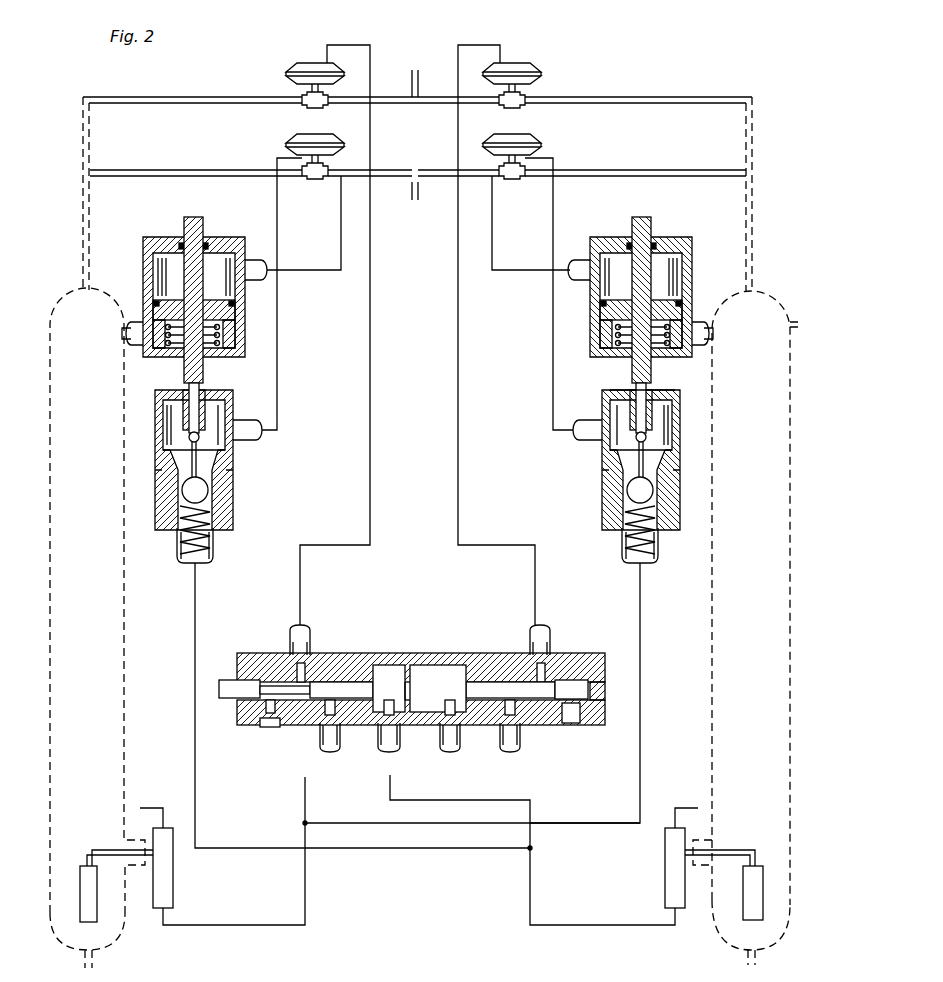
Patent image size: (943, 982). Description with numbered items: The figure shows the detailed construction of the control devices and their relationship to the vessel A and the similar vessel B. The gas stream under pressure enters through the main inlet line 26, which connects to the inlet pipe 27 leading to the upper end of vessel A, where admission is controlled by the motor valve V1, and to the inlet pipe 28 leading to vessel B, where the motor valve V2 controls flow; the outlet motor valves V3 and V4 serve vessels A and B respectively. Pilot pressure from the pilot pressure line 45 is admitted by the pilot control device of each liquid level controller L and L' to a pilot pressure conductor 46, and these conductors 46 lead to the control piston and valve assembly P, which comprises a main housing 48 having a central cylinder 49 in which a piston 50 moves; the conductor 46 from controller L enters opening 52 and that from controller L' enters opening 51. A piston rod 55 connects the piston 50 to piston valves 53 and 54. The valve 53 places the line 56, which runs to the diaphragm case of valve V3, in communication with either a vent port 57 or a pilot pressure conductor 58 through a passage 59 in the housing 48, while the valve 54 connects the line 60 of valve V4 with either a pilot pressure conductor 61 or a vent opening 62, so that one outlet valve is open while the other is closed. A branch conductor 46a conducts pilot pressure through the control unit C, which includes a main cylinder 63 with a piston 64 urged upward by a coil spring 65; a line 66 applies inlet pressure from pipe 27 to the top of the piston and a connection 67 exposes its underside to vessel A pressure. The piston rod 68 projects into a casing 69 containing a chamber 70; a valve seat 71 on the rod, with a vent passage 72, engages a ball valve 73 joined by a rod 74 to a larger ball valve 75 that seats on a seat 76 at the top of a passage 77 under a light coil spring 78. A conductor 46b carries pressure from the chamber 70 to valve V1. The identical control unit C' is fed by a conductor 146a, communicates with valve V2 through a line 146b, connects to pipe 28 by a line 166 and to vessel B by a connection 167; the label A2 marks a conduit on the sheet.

The main inlet line 26 is at (413, 200).
The inlet pipe 27 is at (437, 168).
The inlet pipe 28 is at (218, 170).
The pilot pressure line 45 is at (165, 812).
The pilot pressure conductor 46 is at (305, 918).
The branch conductor 46a is at (662, 545).
The conductor 46b is at (553, 398).
The main housing 48 is at (343, 653).
The central cylinder 49 is at (448, 668).
The piston 50 is at (405, 668).
The opening 51 is at (463, 737).
The opening 52 is at (305, 775).
The piston valve 53 is at (538, 690).
The piston valve 54 is at (263, 680).
The piston rod 55 is at (483, 685).
The line 56 is at (455, 480).
The vent port 57 is at (603, 720).
The pilot pressure conductor 58 is at (520, 742).
The passage 59 is at (518, 665).
The line 60 is at (371, 481).
The pilot pressure conductor 61 is at (322, 740).
The vent opening 62 is at (268, 730).
The main cylinder 63 is at (143, 273).
The piston 64 is at (238, 300).
The coil spring 65 is at (225, 330).
The line 66 is at (493, 213).
The connection 67 is at (700, 318).
The piston rod 68 is at (205, 355).
The casing 69 is at (665, 392).
The chamber 70 is at (218, 413).
The valve seat 71 is at (190, 430).
The vent passage 72 is at (205, 380).
The ball valve 73 is at (190, 440).
The rod 74 is at (235, 455).
The ball valve 75 is at (215, 490).
The seat 76 is at (232, 468).
The passage 77 is at (228, 505).
The light coil spring 78 is at (188, 497).
The conductor 146a is at (195, 593).
The line 146b is at (279, 380).
The line 166 is at (318, 270).
The connection 167 is at (125, 333).
The motor valve V1 is at (512, 133).
The motor valve V2 is at (328, 133).
The motor valve V3 is at (528, 60).
The motor valve V4 is at (305, 60).
The vessel A is at (785, 292).
The vessel B is at (62, 300).
The control unit C is at (599, 237).
The control unit C' is at (220, 238).
The liquid level controller L is at (691, 864).
The liquid level controller L' is at (155, 875).
The control piston and valve assembly P is at (432, 663).
The conduit A2 is at (560, 828).